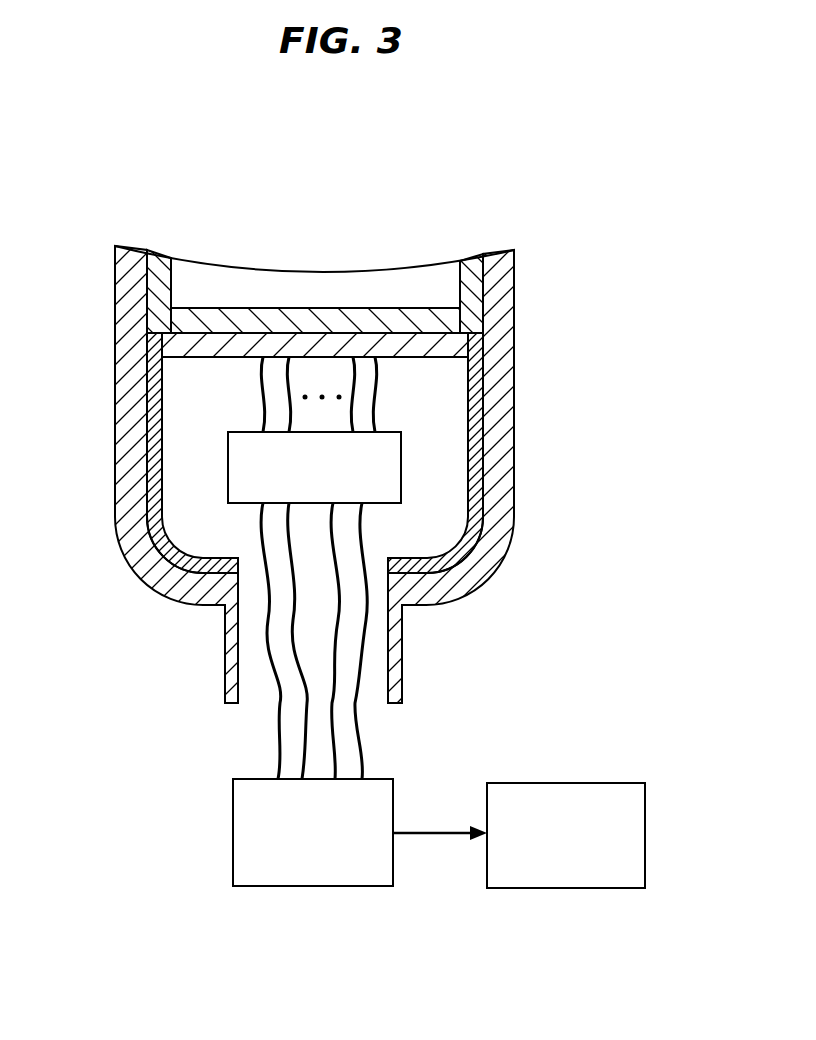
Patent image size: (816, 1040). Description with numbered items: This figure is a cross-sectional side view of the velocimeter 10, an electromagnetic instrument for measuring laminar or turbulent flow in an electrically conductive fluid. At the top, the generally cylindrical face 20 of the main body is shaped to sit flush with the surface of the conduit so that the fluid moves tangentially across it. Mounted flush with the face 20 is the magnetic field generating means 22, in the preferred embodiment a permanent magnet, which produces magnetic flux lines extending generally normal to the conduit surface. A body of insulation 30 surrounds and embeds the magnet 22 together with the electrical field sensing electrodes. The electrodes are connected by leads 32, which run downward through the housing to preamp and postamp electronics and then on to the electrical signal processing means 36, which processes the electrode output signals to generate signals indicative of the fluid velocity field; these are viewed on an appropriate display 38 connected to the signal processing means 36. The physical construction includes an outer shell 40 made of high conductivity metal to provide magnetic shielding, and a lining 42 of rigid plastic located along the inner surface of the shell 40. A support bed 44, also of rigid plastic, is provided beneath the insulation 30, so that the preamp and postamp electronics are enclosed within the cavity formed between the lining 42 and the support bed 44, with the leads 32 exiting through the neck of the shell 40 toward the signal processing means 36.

The velocimeter 10 is at (553, 340).
The face 20 is at (471, 261).
The magnetic field generating means 22 is at (292, 271).
The body of insulation 30 is at (158, 255).
The leads 32 is at (330, 735).
The electrical signal processing means 36 is at (233, 833).
The display 38 is at (645, 833).
The outer shell 40 is at (115, 420).
The lining 42 is at (162, 454).
The support bed 44 is at (197, 358).